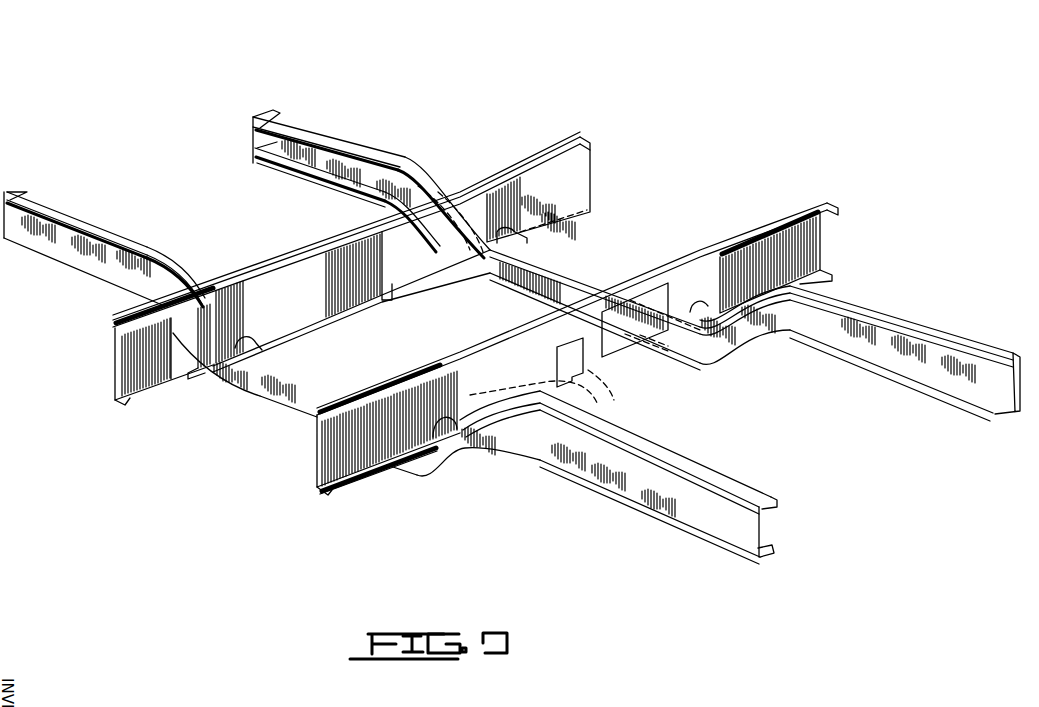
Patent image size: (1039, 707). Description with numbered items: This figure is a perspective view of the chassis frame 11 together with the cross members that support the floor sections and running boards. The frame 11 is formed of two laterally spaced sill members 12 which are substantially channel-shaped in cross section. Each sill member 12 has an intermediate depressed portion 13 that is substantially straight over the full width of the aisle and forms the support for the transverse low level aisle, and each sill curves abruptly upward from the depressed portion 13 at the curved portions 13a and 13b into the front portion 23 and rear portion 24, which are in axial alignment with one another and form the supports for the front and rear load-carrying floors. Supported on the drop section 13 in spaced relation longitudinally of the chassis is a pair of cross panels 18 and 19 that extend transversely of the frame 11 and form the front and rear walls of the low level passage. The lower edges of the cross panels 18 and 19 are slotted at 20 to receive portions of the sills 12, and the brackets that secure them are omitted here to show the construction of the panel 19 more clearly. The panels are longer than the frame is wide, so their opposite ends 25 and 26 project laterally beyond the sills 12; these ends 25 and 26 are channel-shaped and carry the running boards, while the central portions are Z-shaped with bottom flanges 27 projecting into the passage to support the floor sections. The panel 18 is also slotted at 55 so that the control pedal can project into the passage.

The frame 11 is at (207, 108).
The sill member 12 is at (965, 345).
The depressed portion 13 is at (270, 397).
The curved portion 13a is at (437, 183).
The curved portion 13b is at (470, 465).
The cross panel 18 is at (291, 277).
The cross panel 19 is at (743, 237).
The slot 20 is at (247, 343).
The front portion 23 is at (318, 127).
The rear portion 24 is at (963, 388).
The end portion 25 is at (145, 352).
The end portion 26 is at (580, 173).
The flange 27 is at (310, 335).
The slot 55 is at (170, 363).